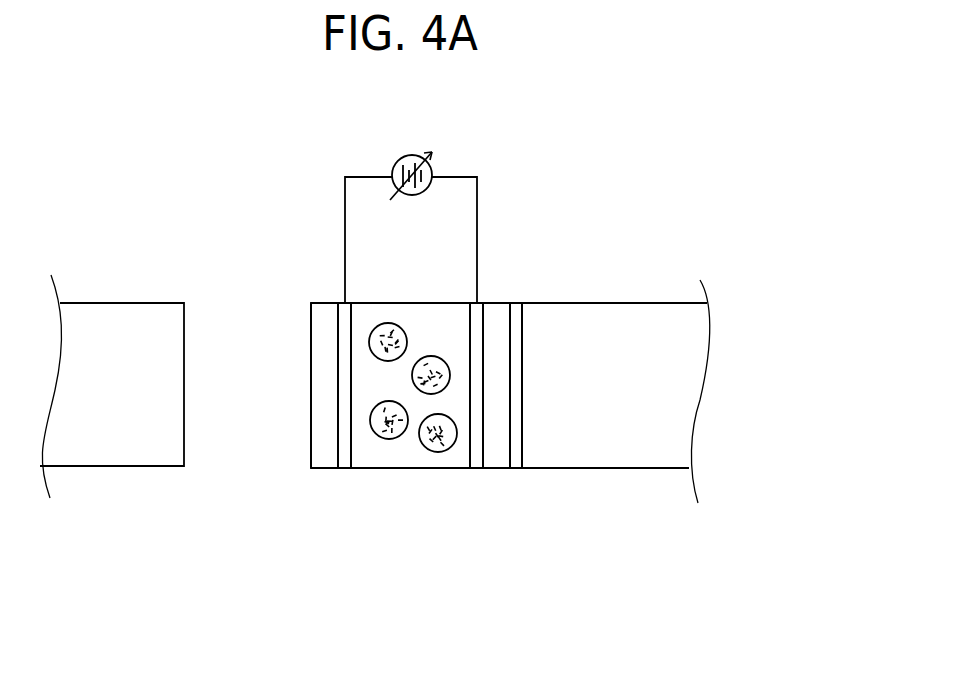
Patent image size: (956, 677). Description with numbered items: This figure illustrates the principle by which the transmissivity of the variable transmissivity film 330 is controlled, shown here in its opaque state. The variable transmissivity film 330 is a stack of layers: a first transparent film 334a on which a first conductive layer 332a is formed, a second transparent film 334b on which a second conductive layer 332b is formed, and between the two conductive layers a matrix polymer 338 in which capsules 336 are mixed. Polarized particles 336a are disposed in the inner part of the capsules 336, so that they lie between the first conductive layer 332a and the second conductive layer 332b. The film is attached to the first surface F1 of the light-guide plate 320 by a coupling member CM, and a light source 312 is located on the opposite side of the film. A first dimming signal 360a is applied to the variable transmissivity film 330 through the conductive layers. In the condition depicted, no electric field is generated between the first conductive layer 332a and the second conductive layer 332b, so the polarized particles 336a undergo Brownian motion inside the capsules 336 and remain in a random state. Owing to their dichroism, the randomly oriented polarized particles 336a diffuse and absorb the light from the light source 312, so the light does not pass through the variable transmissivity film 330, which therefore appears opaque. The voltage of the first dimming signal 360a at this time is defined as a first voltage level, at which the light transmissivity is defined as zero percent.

The light source 312 is at (131, 318).
The light-guide plate 320 is at (638, 323).
The variable transmissivity film 330 is at (421, 407).
The first conductive layer 332a is at (345, 468).
The second conductive layer 332b is at (477, 468).
The first transparent film 334a is at (323, 468).
The second transparent film 334b is at (500, 468).
The capsules 336 is at (406, 438).
The polarized particles 336a is at (378, 440).
The matrix polymer 338 is at (437, 462).
The first dimming signal 360a is at (411, 150).
The coupling member CM is at (511, 305).
The first surface F1 is at (523, 328).